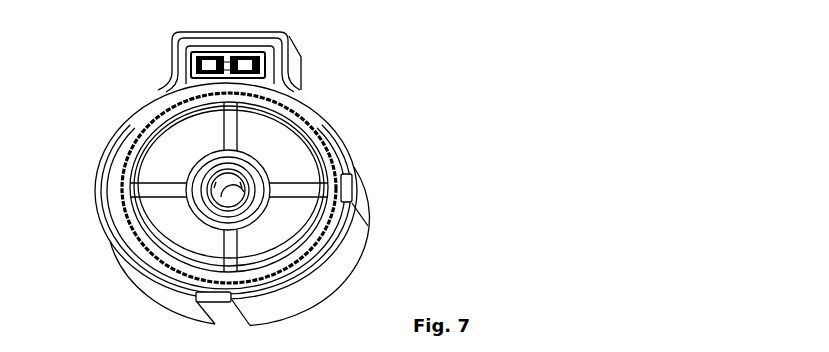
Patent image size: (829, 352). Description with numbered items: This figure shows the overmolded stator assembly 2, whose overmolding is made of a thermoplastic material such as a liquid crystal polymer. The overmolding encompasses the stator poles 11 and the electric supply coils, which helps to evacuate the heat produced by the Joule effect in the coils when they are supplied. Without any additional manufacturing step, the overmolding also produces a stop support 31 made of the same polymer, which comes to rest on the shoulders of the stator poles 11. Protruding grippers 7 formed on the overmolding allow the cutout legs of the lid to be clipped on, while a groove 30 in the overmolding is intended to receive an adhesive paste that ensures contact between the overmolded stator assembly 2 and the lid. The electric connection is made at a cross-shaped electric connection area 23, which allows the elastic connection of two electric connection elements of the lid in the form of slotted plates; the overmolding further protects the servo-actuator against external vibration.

The overmolded stator assembly 2 is at (376, 140).
The protruding grippers 7 is at (362, 192).
The stator poles 11 is at (290, 128).
The plug connector 23 is at (206, 45).
The groove 30 is at (108, 127).
The stop support 31 is at (195, 189).